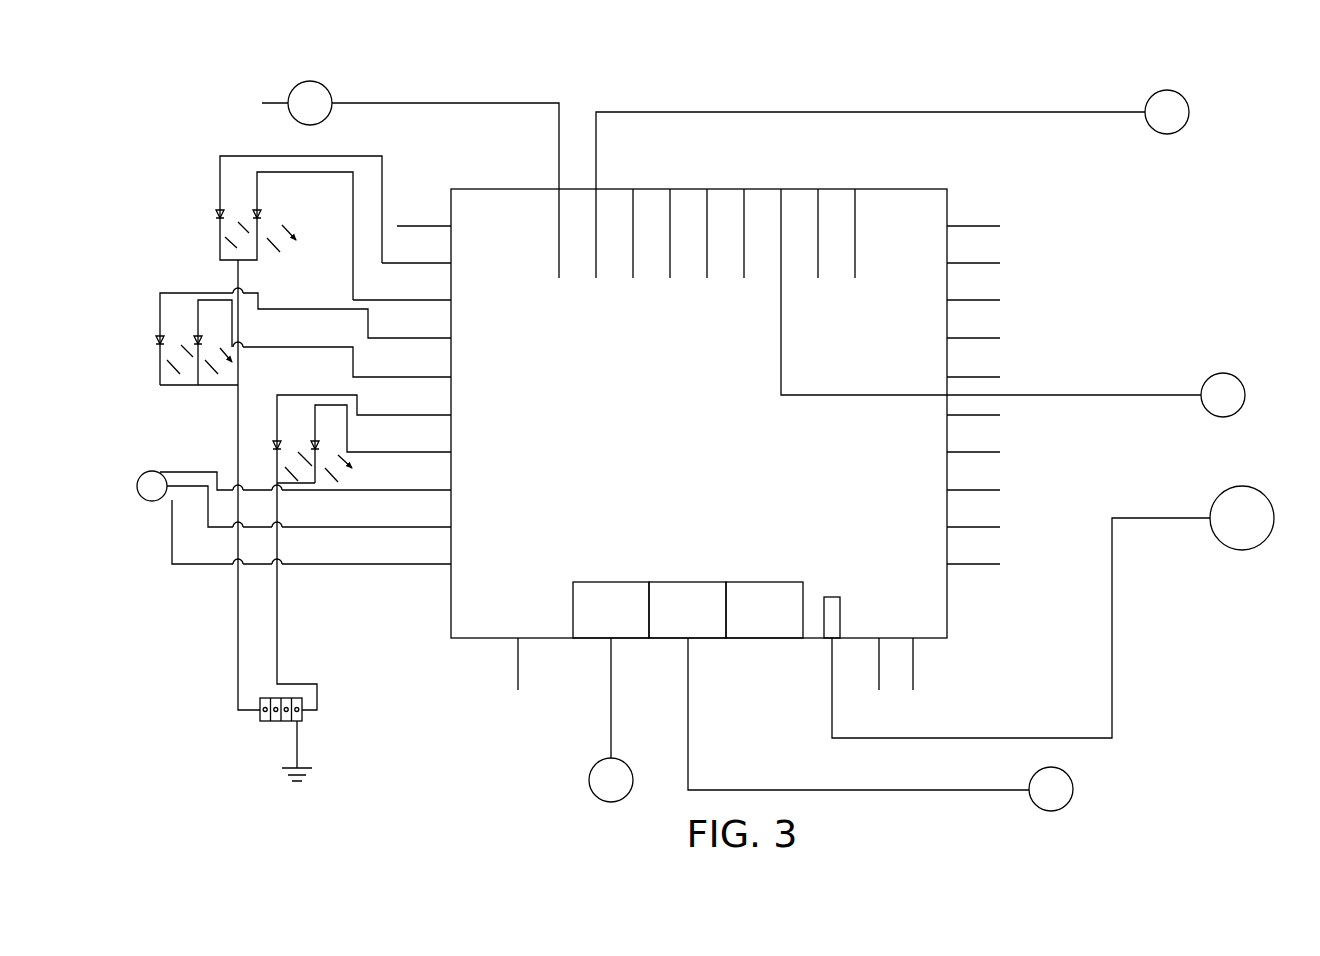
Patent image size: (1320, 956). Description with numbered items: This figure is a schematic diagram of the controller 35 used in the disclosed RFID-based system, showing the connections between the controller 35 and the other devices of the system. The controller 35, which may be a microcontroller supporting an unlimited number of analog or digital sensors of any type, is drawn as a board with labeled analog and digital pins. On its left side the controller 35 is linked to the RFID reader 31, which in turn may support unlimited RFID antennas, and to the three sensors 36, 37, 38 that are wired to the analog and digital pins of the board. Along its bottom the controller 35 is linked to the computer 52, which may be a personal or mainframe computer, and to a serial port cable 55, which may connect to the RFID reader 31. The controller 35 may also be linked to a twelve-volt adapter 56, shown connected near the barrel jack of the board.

The RFID reader 31 is at (143, 498).
The controller 35 is at (458, 645).
The sensor 36 is at (293, 95).
The sensor 37 is at (1189, 108).
The sensor 38 is at (1240, 378).
The computer 52 is at (589, 778).
The serial port cable 55 is at (1073, 788).
The 12V adapter 56 is at (1247, 552).